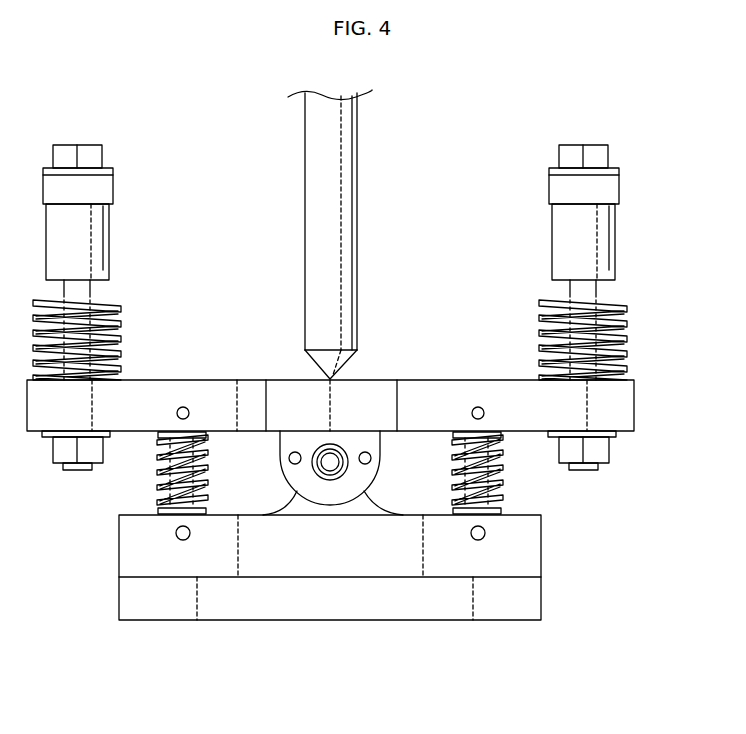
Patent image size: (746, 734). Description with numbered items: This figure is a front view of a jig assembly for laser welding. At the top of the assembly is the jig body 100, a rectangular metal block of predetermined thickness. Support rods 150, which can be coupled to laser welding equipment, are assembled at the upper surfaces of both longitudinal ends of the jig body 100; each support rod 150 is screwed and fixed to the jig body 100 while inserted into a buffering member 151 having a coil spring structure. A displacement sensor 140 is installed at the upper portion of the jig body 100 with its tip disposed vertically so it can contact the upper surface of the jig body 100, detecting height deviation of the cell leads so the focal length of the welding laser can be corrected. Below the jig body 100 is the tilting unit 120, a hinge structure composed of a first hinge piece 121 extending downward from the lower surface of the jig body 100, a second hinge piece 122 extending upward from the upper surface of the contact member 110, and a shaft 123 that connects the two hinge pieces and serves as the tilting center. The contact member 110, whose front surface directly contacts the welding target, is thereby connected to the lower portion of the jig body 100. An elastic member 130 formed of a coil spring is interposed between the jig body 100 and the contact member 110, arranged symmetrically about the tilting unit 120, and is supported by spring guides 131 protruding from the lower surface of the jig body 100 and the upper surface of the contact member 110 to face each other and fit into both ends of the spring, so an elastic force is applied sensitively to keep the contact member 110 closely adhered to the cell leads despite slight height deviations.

The jig body 100 is at (634, 395).
The contact member 110 is at (114, 554).
The tilting unit 120 is at (338, 570).
The first hinge piece 121 is at (382, 460).
The second hinge piece 122 is at (367, 493).
The shaft 123 is at (328, 472).
The elastic member 130 is at (500, 455).
The spring guide 131 is at (488, 500).
The displacement sensor 140 is at (357, 180).
The support rod 150 is at (641, 262).
The buffering member 151 is at (627, 321).